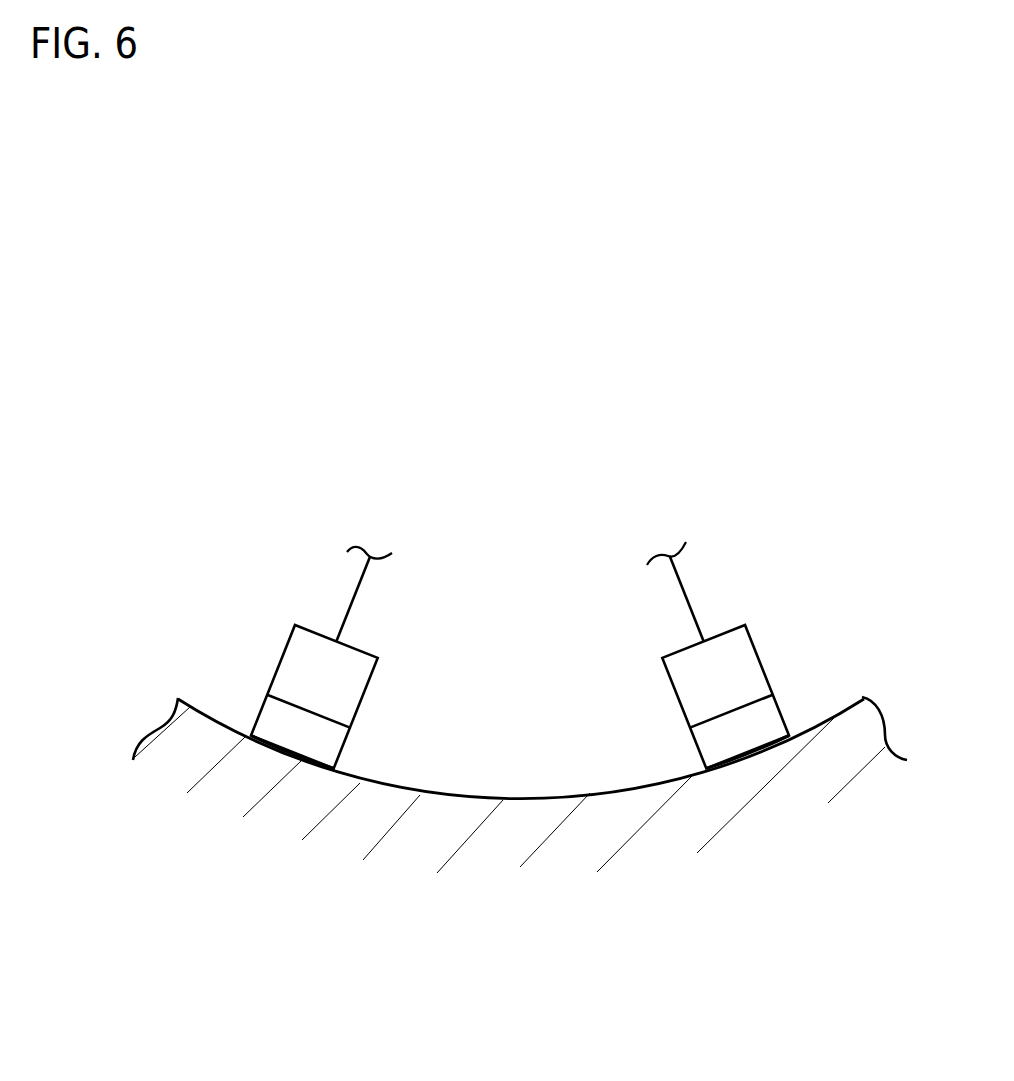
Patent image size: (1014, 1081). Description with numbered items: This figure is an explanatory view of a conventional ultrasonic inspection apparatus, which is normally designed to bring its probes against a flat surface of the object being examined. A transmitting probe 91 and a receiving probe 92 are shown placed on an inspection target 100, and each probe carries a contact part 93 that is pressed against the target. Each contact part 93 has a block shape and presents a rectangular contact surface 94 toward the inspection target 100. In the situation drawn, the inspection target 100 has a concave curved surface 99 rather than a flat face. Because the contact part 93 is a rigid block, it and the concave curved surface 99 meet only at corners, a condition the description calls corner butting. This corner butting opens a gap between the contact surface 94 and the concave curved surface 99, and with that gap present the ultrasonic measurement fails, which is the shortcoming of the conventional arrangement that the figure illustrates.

The transmitting probe 91 is at (294, 665).
The receiving probe 92 is at (745, 665).
The contact part 93 is at (267, 718).
The contact surface 94 is at (287, 758).
The concave curved surface 99 is at (480, 798).
The inspection target 100 is at (563, 843).